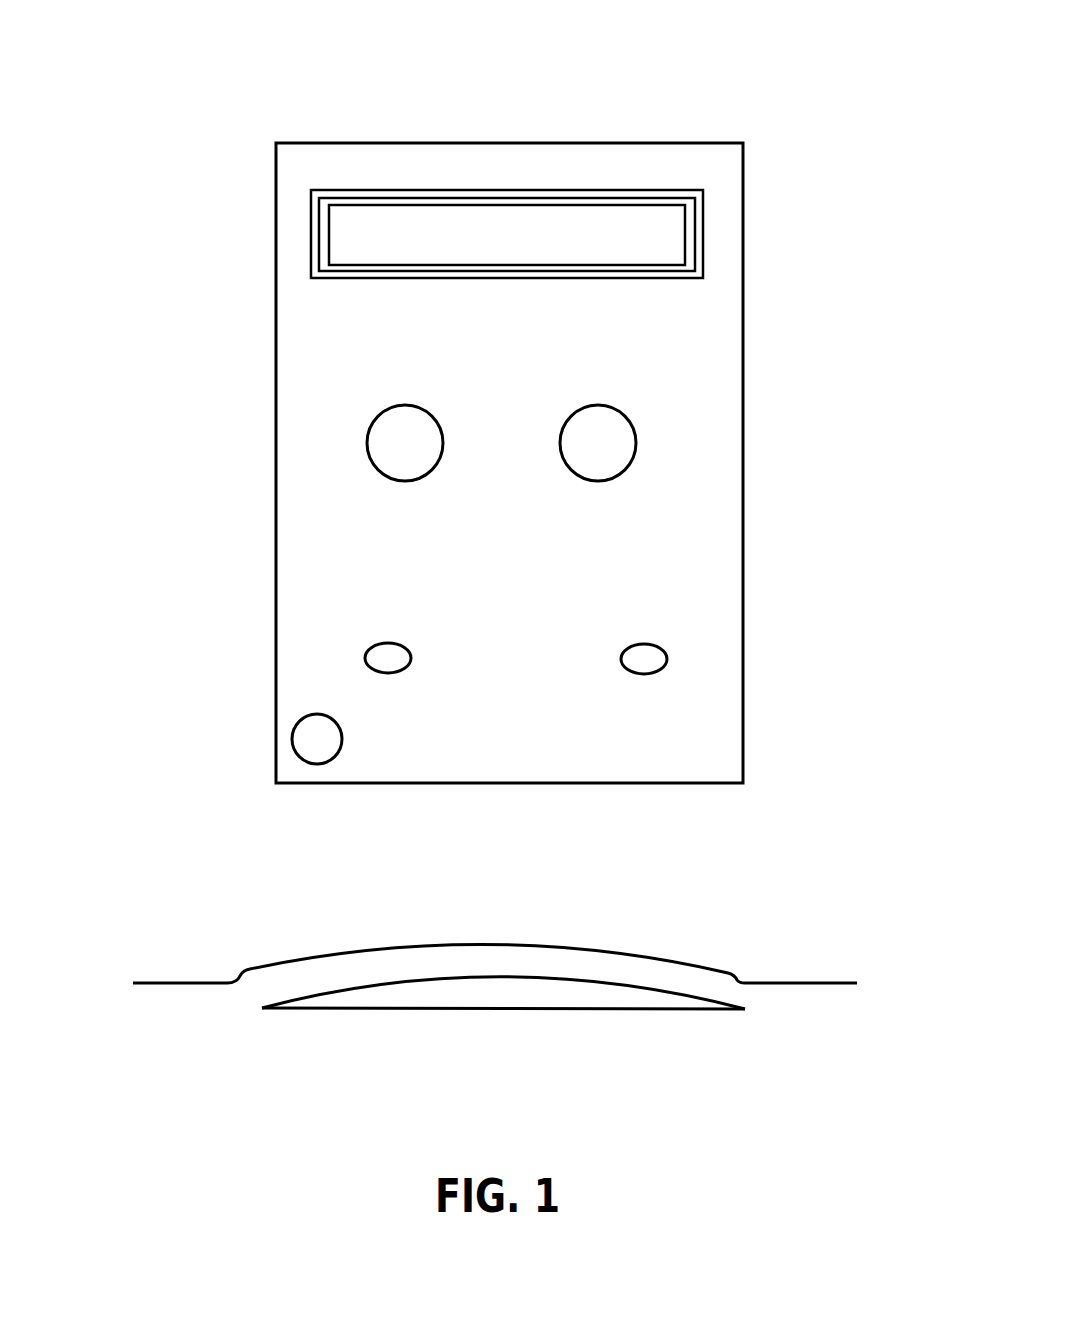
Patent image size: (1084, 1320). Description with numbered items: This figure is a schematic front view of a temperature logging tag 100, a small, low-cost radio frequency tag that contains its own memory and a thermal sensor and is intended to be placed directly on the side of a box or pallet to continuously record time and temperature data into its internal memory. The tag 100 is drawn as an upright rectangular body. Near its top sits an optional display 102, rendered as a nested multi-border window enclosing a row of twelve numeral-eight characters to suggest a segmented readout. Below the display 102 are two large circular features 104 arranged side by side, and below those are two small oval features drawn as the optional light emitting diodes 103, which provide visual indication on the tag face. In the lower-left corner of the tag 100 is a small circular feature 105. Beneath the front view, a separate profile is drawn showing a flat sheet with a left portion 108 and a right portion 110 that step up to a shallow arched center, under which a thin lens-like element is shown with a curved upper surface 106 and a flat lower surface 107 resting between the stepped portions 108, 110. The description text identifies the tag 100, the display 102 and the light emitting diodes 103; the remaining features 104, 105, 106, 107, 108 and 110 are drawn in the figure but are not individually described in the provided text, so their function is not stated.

The temperature logging tag 100 is at (360, 55).
The display 102 is at (575, 192).
The light emitting diodes 103 is at (377, 658).
The round buttons 104 is at (380, 437).
The small button 105 is at (293, 737).
The lens upper surface 106 is at (432, 980).
The lens lower surface 107 is at (598, 1010).
The sheet left portion 108 is at (167, 983).
The sheet right portion 110 is at (797, 982).